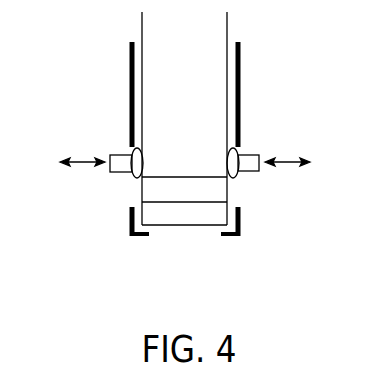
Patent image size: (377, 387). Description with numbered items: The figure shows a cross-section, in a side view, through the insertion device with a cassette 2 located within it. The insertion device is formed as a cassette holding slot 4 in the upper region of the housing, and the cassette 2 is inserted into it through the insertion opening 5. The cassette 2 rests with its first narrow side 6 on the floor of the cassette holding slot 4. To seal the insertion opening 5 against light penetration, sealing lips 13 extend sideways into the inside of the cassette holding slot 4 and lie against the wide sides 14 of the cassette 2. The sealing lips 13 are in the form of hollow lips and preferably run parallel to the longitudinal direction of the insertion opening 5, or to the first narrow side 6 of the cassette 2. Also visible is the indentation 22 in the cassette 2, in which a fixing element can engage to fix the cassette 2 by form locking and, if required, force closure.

The cassette 2 is at (207, 34).
The cassette holding slot 4 is at (240, 70).
The insertion opening 5 is at (232, 236).
The first narrow side 6 is at (180, 227).
The sealing lips 13 is at (132, 150).
The wide sides 14 is at (143, 113).
The indentation 22 is at (218, 187).